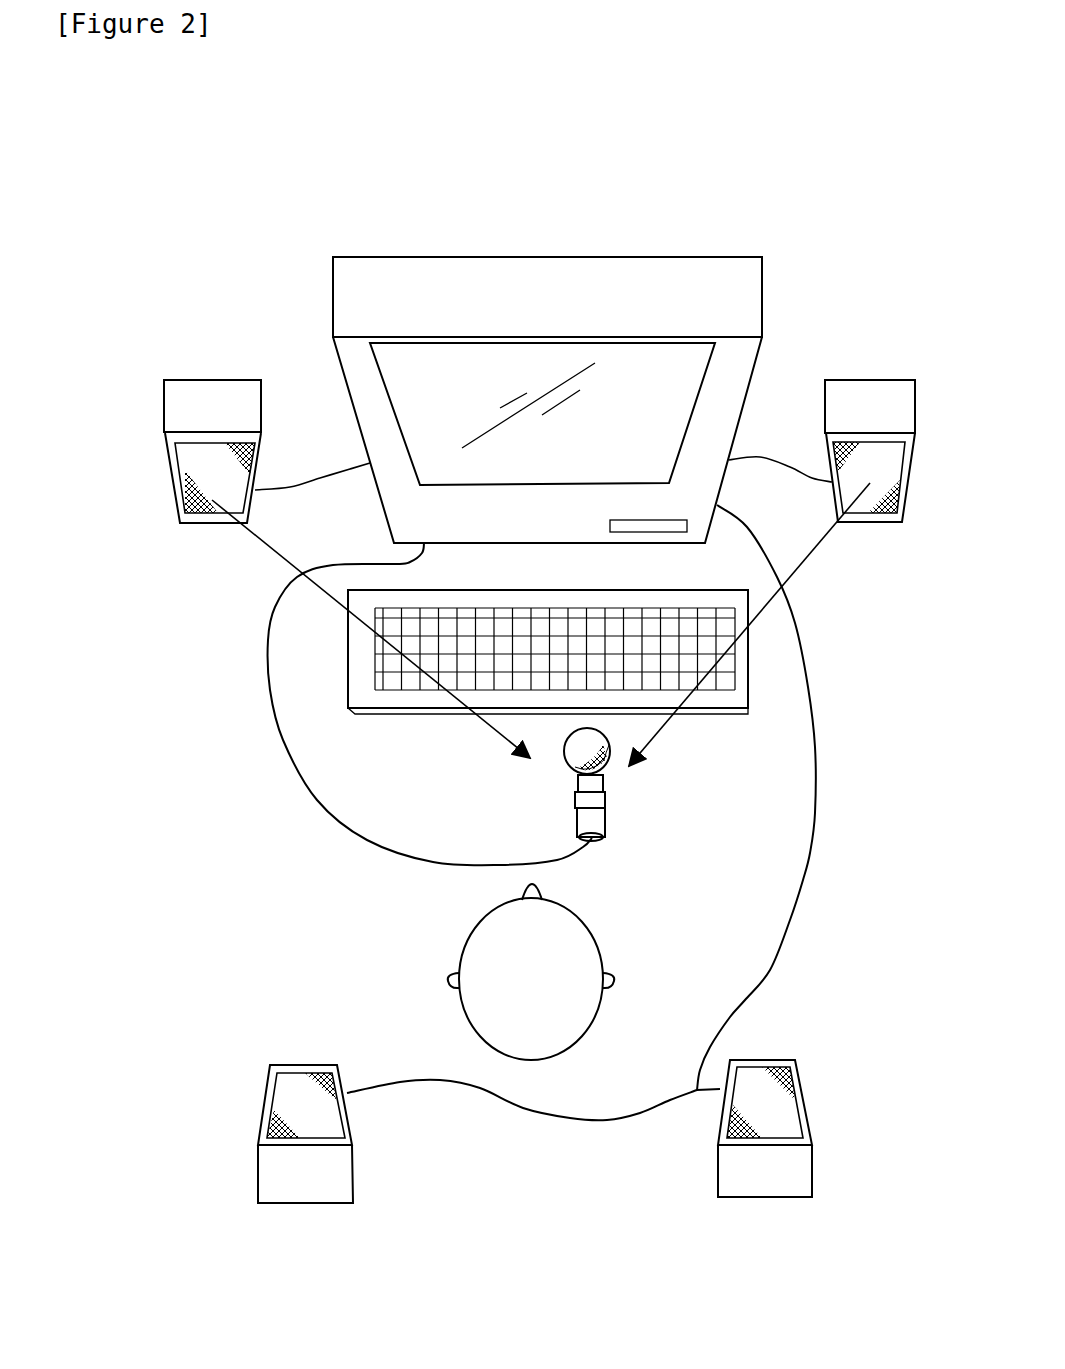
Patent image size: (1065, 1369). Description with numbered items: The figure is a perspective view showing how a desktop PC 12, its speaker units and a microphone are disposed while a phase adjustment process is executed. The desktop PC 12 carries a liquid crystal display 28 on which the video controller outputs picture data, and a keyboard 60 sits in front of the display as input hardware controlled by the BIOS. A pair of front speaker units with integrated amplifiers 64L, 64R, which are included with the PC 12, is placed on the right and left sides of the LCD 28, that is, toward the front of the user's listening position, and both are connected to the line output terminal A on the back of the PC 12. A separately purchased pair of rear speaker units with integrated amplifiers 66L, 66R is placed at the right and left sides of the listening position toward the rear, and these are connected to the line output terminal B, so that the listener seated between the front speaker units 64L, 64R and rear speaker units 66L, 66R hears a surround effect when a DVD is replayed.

The desktop PC 12 is at (224, 200).
The liquid crystal display 28 is at (688, 377).
The keyboard 60 is at (752, 678).
The left front speaker unit 64L is at (212, 378).
The right front speaker unit 64R is at (887, 380).
The left rear speaker unit 66L is at (308, 1205).
The right rear speaker unit 66R is at (772, 1198).